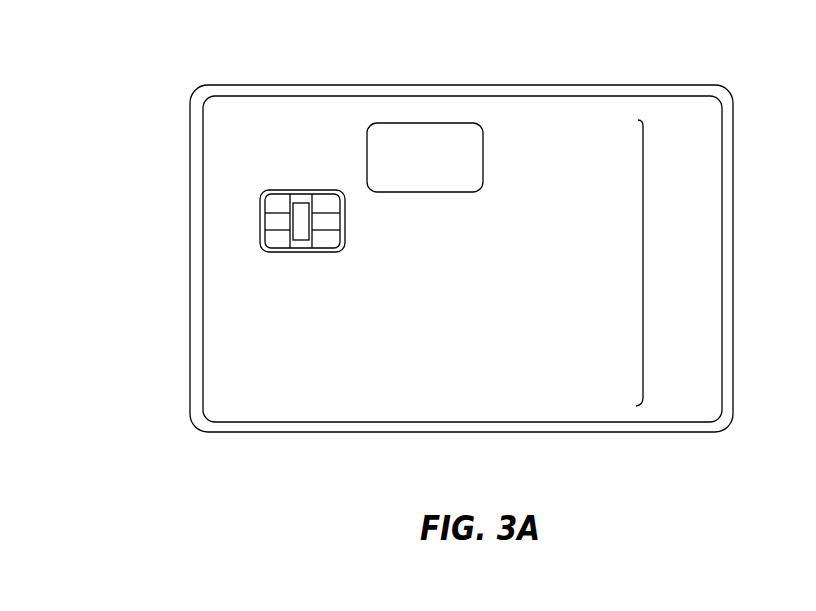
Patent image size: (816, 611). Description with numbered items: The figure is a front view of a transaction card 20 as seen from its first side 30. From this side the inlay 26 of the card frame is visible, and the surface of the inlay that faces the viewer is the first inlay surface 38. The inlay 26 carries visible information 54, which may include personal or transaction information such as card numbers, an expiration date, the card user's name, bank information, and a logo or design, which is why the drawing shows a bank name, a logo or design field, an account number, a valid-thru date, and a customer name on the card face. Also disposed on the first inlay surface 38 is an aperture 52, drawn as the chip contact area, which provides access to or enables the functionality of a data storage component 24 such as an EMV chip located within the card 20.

The transaction card 20 is at (461, 28).
The data storage component 24 is at (297, 190).
The inlay component 26 is at (190, 423).
The first side 30 is at (140, 170).
The first inlay surface 38 is at (444, 256).
The aperture 52 is at (325, 190).
The visible information 54 is at (643, 258).